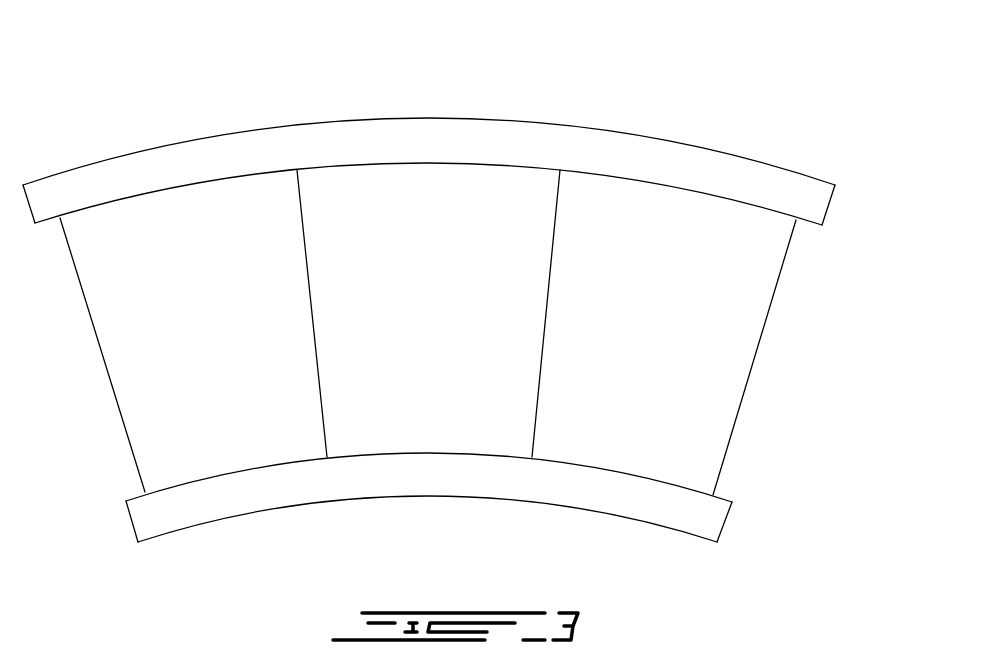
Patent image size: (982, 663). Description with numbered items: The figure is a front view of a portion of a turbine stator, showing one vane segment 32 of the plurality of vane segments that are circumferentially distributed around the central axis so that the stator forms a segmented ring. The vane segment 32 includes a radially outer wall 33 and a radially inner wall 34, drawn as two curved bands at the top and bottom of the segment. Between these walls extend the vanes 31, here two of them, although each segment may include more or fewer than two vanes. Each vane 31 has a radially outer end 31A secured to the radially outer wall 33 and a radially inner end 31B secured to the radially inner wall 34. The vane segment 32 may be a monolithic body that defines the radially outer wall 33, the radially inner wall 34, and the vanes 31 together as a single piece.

The vane 31 is at (206, 415).
The radially outer end 31A is at (195, 183).
The radially inner end 31B is at (273, 466).
The vane segment 32 is at (439, 308).
The radially outer wall 33 is at (785, 197).
The radially inner wall 34 is at (692, 513).